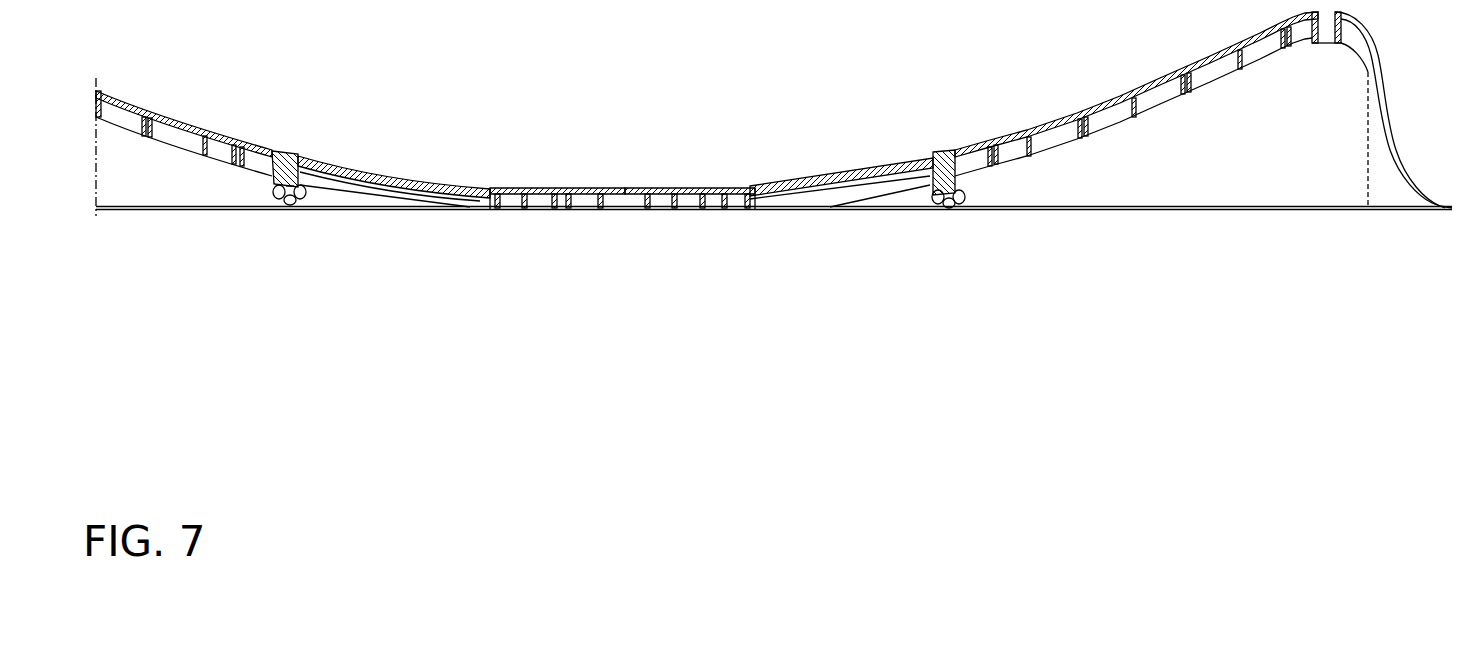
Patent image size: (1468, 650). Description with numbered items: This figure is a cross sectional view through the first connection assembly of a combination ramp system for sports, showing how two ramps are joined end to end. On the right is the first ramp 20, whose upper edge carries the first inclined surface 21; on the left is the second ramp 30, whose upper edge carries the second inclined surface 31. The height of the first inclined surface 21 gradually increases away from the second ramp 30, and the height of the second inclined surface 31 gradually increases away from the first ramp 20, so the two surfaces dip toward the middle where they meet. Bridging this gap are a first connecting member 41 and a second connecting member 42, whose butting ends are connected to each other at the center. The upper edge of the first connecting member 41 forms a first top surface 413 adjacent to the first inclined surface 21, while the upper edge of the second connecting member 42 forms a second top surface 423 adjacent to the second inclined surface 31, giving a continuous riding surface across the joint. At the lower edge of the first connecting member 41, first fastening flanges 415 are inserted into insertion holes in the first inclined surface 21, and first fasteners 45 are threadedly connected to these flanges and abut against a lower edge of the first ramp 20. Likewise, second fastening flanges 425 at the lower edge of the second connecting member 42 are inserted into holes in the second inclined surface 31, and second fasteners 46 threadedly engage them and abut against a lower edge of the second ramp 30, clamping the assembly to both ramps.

The first ramp 20 is at (1173, 216).
The first inclined surface 21 is at (1078, 113).
The second ramp 30 is at (136, 218).
The second inclined surface 31 is at (196, 128).
The first connecting member 41 is at (685, 216).
The second connecting member 42 is at (543, 216).
The first fasteners 45 is at (960, 205).
The second fasteners 46 is at (302, 198).
The first top surface 413 is at (872, 156).
The first fastening flanges 415 is at (946, 212).
The second top surface 423 is at (428, 180).
The second fastening flanges 425 is at (291, 213).